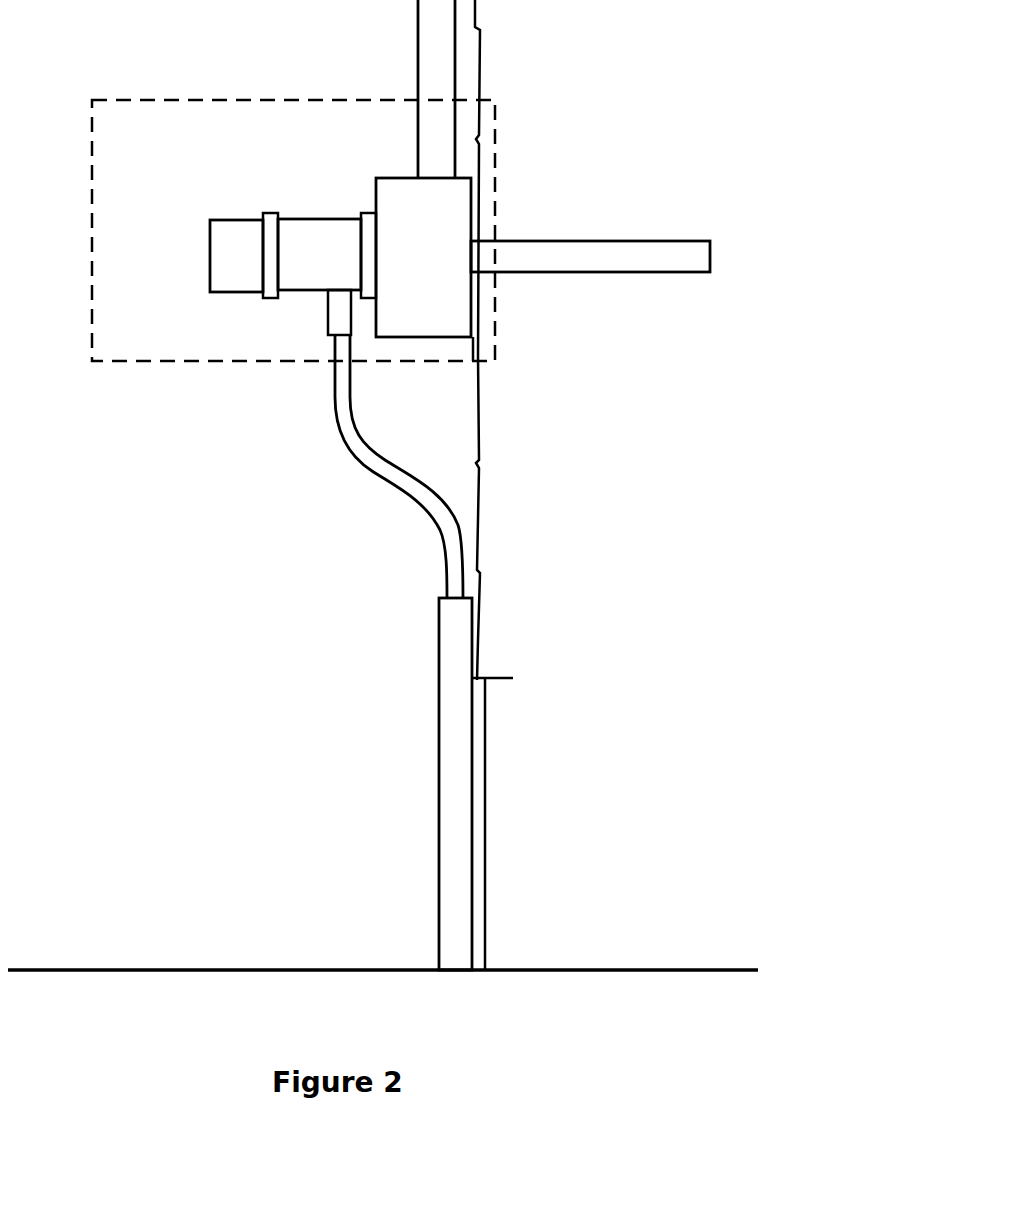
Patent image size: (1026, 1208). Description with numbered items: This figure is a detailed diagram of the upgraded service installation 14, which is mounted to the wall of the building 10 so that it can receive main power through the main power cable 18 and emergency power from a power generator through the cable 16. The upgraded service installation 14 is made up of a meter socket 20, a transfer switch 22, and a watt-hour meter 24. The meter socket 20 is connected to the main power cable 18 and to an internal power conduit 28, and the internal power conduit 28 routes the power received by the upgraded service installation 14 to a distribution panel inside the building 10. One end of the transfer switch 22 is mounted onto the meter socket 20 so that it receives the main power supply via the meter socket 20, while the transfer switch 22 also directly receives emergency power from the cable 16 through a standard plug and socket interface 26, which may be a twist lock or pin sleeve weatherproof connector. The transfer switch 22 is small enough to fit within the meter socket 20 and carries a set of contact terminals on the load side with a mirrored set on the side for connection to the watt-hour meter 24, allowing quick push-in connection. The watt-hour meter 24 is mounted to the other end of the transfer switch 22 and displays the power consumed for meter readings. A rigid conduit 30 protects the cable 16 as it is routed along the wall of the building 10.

The building 10 is at (535, 485).
The upgraded service installation 14 is at (92, 151).
The cable 16 is at (356, 456).
The main power cable 18 is at (418, 20).
The meter socket 20 is at (397, 178).
The transfer switch 22 is at (320, 219).
The watt-hour meter 24 is at (210, 238).
The plug and socket interface 26 is at (328, 318).
The internal power conduit 28 is at (630, 241).
The rigid conduit 30 is at (439, 710).